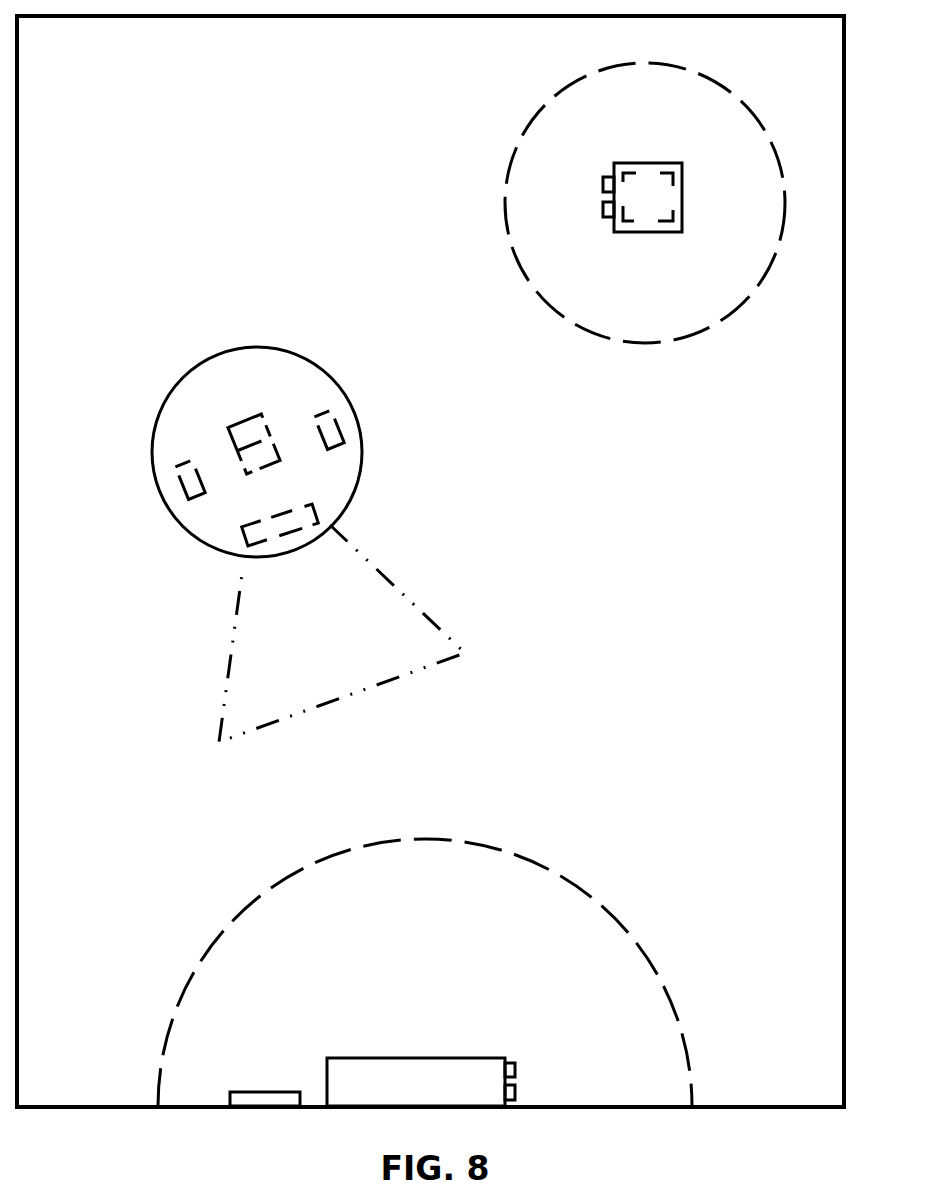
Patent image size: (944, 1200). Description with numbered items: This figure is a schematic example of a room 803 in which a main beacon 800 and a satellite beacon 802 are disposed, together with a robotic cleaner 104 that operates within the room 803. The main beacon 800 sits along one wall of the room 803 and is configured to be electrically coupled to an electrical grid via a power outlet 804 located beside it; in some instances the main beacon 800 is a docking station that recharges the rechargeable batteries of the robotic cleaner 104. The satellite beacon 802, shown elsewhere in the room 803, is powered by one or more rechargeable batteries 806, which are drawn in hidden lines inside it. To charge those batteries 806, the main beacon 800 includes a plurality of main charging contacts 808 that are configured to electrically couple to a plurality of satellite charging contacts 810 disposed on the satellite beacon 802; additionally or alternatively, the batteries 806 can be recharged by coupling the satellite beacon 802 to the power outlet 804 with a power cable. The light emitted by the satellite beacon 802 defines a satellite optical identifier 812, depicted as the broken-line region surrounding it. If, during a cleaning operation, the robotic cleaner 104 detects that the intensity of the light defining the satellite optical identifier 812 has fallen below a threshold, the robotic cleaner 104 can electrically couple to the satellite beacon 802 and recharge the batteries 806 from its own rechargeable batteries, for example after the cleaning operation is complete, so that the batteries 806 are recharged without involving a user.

The robotic cleaner 104 is at (350, 332).
The main beacon 800 is at (338, 1057).
The satellite beacon 802 is at (683, 207).
The room 803 is at (845, 92).
The power outlet 804 is at (232, 1092).
The rechargeable batteries 806 is at (653, 175).
The main charging contacts 808 is at (513, 1062).
The satellite charging contacts 810 is at (603, 180).
The satellite optical identifier 812 is at (727, 317).